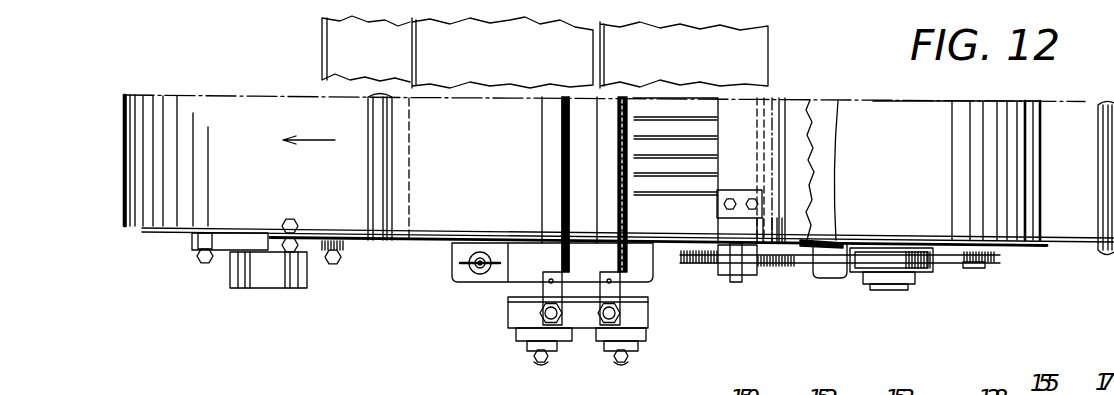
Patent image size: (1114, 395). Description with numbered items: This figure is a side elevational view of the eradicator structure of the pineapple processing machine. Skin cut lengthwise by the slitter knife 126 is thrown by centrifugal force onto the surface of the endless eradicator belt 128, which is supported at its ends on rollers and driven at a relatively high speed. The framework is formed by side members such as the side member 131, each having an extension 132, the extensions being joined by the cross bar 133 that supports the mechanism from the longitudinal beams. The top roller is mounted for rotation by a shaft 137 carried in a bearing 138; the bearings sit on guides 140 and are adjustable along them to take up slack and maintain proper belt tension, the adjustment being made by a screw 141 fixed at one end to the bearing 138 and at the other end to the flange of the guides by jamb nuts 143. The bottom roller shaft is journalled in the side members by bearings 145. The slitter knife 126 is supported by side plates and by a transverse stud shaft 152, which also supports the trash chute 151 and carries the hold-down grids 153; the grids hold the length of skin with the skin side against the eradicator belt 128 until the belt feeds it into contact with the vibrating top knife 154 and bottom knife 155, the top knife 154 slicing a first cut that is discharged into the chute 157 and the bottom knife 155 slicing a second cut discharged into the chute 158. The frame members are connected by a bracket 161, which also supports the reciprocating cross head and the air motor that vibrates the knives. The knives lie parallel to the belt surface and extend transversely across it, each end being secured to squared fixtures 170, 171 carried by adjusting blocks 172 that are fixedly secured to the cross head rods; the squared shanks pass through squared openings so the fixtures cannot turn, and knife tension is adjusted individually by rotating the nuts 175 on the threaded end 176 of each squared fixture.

The slitter knife 126 is at (828, 122).
The eradicator belt 128 is at (236, 84).
The side member 131 is at (430, 243).
The extension 132 is at (1053, 246).
The cross bar 133 is at (1098, 163).
The shaft 137 is at (884, 290).
The bearing 138 is at (865, 263).
The guide 140 is at (845, 258).
The screw 141 is at (790, 266).
The jamb nut 143 is at (750, 263).
The bearing 145 is at (318, 250).
The trash chute 151 is at (662, 62).
The transverse stud shaft 152 is at (770, 110).
The hold-down grid 153 is at (688, 137).
The top knife 154 is at (603, 130).
The bottom knife 155 is at (572, 187).
The chute 157 is at (508, 58).
The chute 158 is at (378, 58).
The bracket 161 is at (514, 270).
The squared fixture 170 is at (610, 298).
The squared fixture 171 is at (547, 298).
The adjusting block 172 is at (582, 316).
The nut 175 is at (557, 360).
The threaded end 176 is at (538, 362).